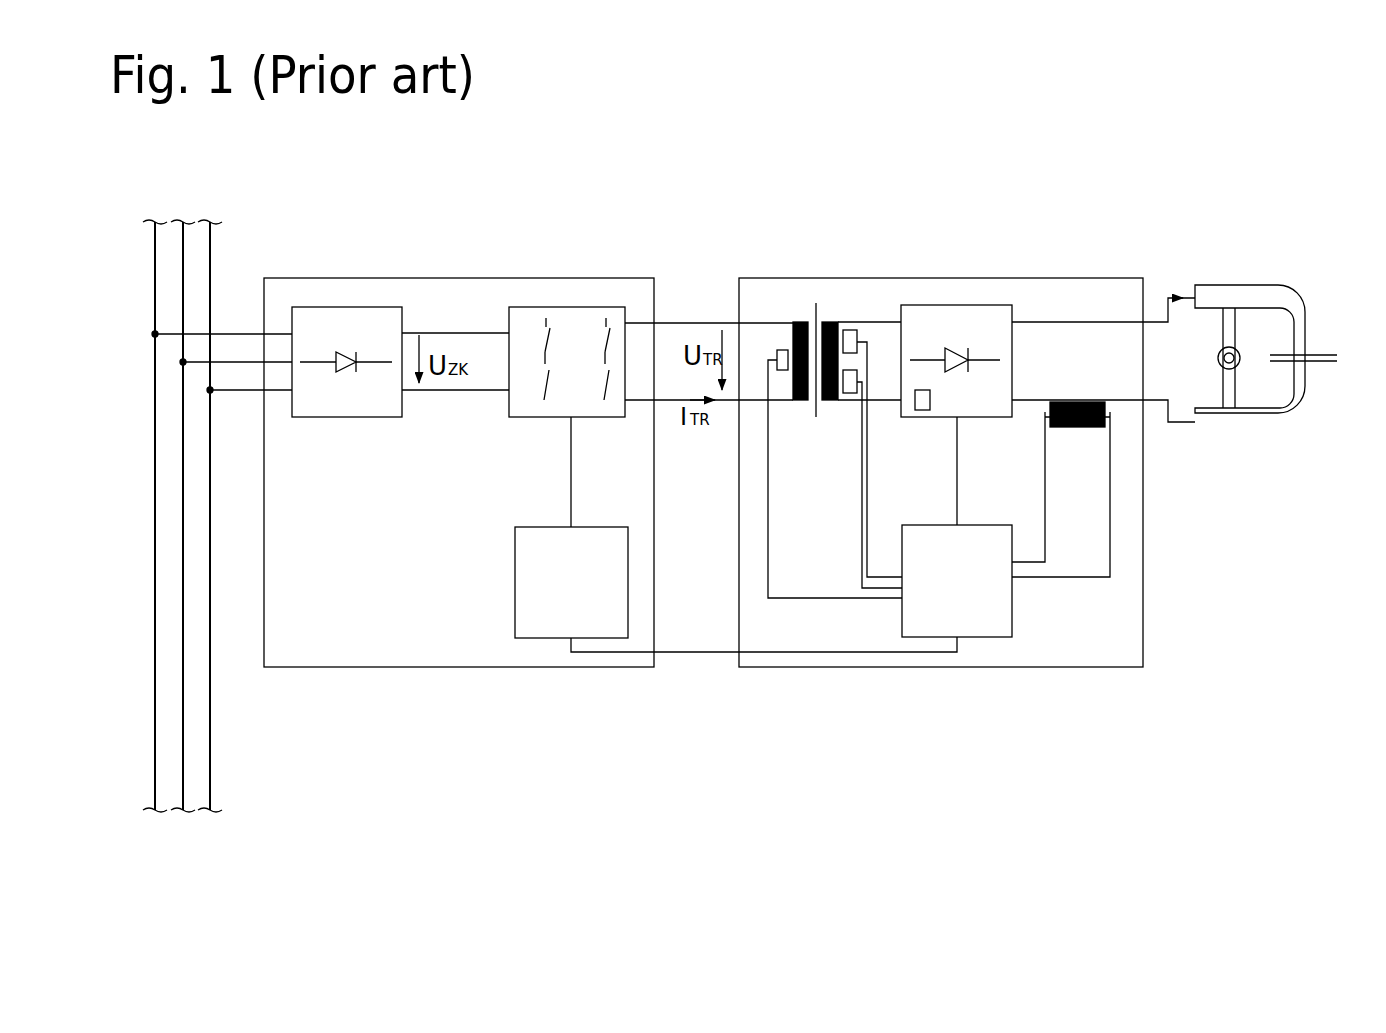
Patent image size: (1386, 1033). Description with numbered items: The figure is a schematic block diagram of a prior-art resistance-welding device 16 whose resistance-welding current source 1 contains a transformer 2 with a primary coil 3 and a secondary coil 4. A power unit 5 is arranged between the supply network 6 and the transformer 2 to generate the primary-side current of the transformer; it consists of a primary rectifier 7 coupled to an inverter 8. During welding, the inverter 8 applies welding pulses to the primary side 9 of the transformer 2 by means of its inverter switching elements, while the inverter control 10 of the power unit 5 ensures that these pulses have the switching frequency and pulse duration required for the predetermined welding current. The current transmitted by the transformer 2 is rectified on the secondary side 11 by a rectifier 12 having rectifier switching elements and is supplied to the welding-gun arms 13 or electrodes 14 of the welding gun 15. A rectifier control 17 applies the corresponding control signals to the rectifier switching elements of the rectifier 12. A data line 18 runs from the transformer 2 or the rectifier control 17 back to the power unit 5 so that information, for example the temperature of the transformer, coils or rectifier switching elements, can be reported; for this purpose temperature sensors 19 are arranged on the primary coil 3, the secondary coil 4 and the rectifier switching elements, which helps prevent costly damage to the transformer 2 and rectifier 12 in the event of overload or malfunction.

The resistance-welding current source 1 is at (760, 247).
The transformer 2 is at (817, 296).
The primary coil 3 is at (791, 324).
The secondary coil 4 is at (828, 322).
The power unit 5 is at (332, 278).
The supply network 6 is at (190, 211).
The primary rectifier 7 is at (377, 418).
The inverter 8 is at (528, 417).
The primary side 9 is at (787, 341).
The inverter control 10 is at (736, 589).
The secondary side 11 is at (850, 318).
The rectifier 12 is at (937, 305).
The welding-gun arms 13 is at (1255, 295).
The electrodes 14 is at (1305, 360).
The welding gun 15 is at (1287, 237).
The resistance-welding device 16 is at (1230, 155).
The rectifier control 17 is at (1006, 519).
The data line 18 is at (698, 652).
The temperature sensors 19 is at (918, 399).